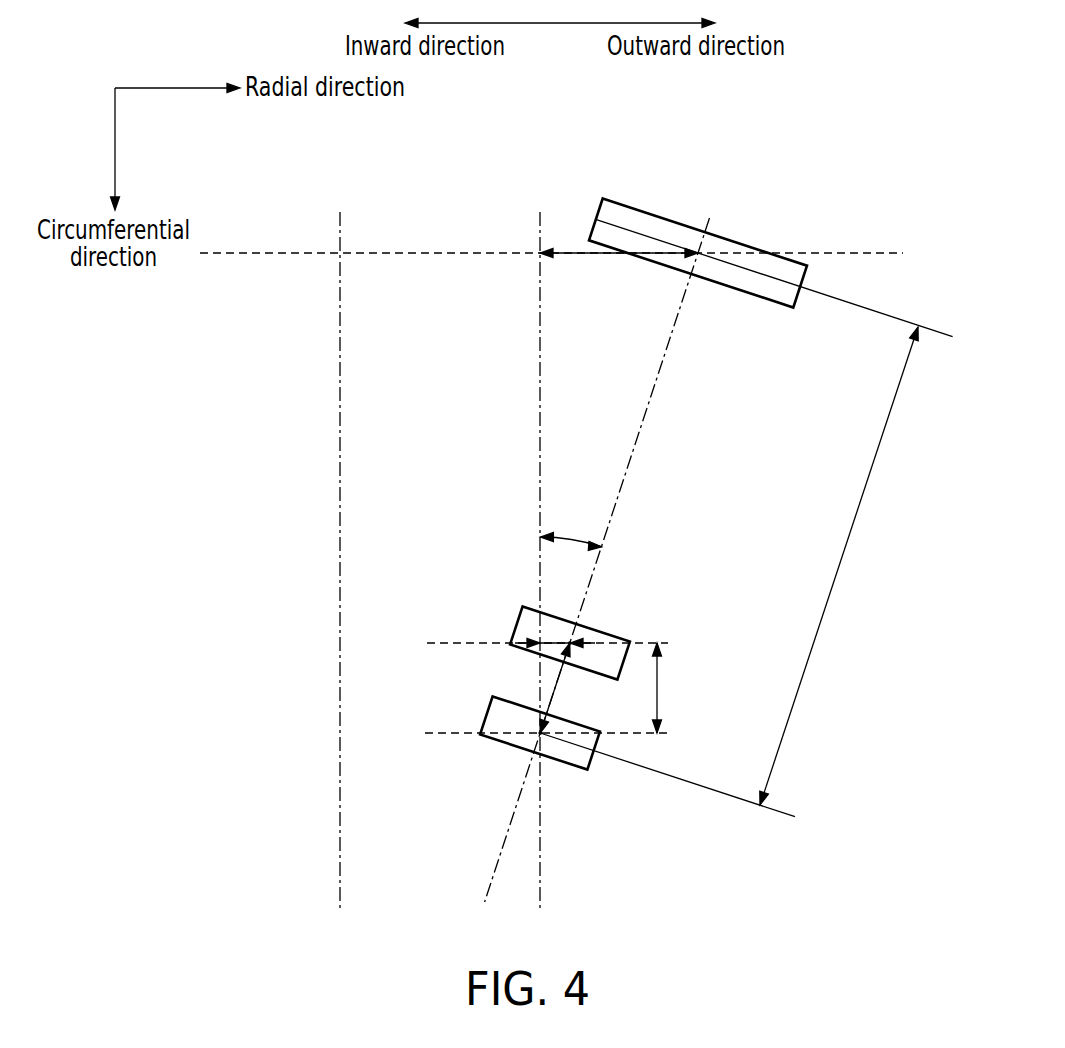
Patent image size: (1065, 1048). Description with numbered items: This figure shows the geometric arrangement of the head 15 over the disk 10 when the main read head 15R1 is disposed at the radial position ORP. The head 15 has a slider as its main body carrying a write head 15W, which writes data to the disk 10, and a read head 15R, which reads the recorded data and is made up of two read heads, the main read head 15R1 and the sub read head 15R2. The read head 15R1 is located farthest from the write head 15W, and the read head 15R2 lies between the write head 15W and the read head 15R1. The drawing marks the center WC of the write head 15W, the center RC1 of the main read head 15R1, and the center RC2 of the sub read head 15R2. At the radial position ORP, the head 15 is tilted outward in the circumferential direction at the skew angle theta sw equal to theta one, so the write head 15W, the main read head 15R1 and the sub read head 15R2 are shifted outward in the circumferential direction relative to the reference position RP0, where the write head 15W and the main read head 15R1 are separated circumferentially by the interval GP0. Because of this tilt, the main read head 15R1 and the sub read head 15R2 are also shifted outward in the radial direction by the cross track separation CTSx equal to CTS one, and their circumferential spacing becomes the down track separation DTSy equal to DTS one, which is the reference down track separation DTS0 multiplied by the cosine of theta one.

The disk 10 is at (836, 212).
The head 15 is at (509, 362).
The write head 15W is at (632, 208).
The read head 15R is at (660, 610).
The main read head 15R1 is at (500, 744).
The sub read head 15R2 is at (533, 608).
The center of the write head WC is at (702, 252).
The center of the read head 15R1 RC1 is at (541, 740).
The center of the read head 15R2 RC2 is at (569, 650).
The reference position RP0 is at (340, 218).
The radial position ORP is at (540, 218).
The interval GP0 is at (832, 597).
The cross track separation CTSx is at (553, 641).
The down track separation at the reference position DTS0 is at (555, 683).
The down track separation DTSy is at (658, 685).